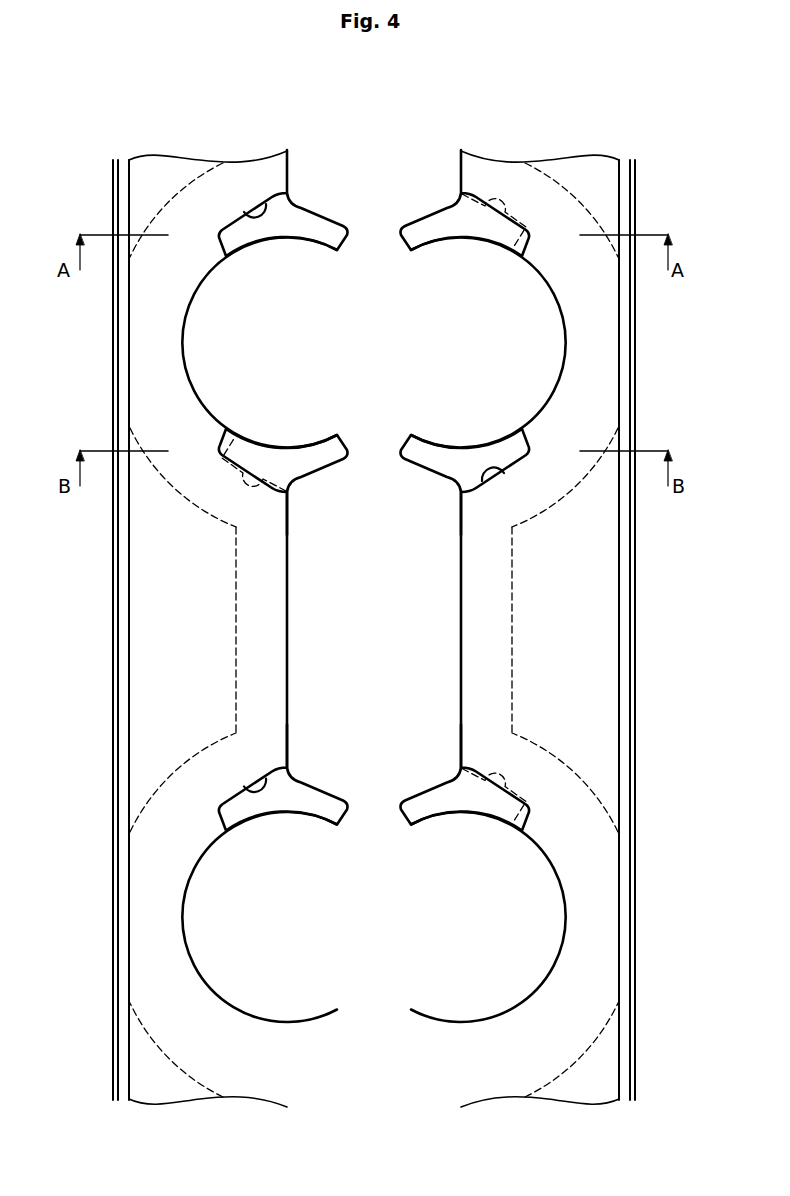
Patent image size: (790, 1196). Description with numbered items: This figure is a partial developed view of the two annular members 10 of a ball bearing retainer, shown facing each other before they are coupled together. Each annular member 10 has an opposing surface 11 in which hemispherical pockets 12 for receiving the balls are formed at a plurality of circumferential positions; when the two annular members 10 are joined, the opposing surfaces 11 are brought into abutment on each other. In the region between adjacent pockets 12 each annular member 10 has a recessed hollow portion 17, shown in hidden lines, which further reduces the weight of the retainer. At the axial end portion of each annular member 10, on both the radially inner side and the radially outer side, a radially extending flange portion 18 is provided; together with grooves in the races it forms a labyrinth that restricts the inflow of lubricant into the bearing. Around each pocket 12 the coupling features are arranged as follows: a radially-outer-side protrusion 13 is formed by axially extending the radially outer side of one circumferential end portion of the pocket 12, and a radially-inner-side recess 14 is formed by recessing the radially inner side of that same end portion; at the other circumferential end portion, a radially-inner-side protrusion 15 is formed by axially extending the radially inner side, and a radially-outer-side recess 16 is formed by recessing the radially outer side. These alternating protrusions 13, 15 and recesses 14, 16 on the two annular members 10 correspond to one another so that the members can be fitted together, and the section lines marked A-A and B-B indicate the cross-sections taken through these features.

The annular member 10 is at (138, 801).
The opposing surface 11 is at (286, 704).
The hemispherical pocket 12 is at (182, 330).
The radially-outer-side protrusion 13 is at (429, 226).
The radially-inner-side recess 14 is at (506, 213).
The radially-inner-side protrusion 15 is at (321, 226).
The radially-outer-side recess 16 is at (262, 217).
The recessed hollow portion 17 is at (236, 614).
The flange portion 18 is at (118, 676).